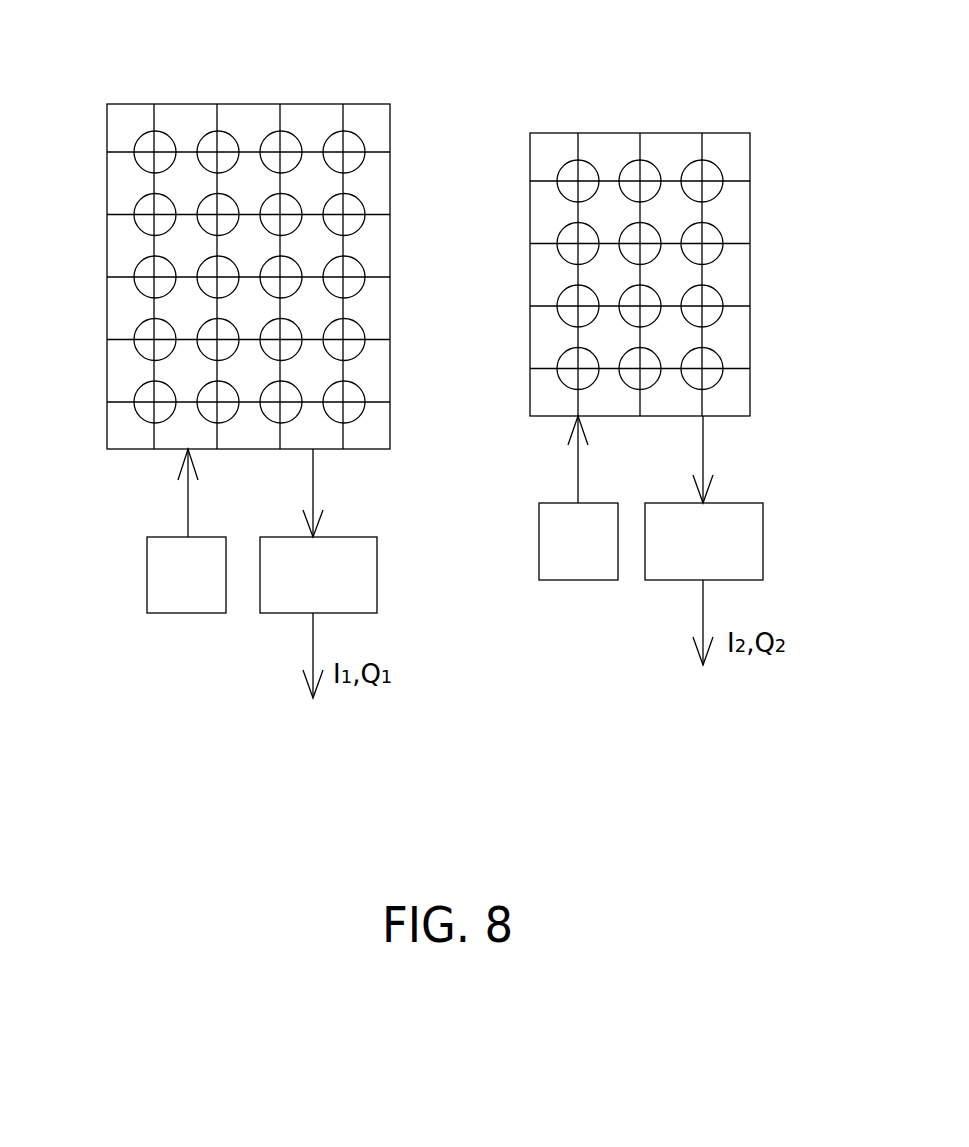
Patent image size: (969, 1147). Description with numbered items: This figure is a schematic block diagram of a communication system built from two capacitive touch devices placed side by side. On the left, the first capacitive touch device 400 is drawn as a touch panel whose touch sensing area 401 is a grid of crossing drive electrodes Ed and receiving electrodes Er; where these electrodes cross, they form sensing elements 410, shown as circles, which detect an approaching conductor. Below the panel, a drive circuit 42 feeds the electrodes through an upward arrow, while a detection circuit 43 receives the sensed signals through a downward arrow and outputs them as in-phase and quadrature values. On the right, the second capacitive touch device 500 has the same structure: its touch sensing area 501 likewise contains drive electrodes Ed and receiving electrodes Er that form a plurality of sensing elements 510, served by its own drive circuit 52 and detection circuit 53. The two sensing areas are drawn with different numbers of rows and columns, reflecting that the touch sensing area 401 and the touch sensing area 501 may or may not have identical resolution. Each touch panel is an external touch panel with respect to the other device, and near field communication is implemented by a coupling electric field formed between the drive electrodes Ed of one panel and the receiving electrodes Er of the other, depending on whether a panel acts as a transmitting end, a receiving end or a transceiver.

The first capacitive touch device 400 is at (264, 43).
The touch sensing area 401 is at (107, 203).
The sensing element 410 is at (147, 130).
The drive circuit 42 is at (147, 585).
The detection circuit 43 is at (377, 575).
The second capacitive touch device 500 is at (657, 40).
The touch sensing area 501 is at (750, 252).
The sensing element 510 is at (720, 165).
The drive circuit 52 is at (539, 543).
The detection circuit 53 is at (763, 540).
The receiving electrode Er is at (343, 115).
The drive electrode Ed is at (380, 152).